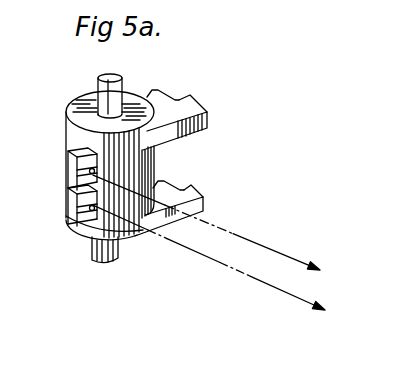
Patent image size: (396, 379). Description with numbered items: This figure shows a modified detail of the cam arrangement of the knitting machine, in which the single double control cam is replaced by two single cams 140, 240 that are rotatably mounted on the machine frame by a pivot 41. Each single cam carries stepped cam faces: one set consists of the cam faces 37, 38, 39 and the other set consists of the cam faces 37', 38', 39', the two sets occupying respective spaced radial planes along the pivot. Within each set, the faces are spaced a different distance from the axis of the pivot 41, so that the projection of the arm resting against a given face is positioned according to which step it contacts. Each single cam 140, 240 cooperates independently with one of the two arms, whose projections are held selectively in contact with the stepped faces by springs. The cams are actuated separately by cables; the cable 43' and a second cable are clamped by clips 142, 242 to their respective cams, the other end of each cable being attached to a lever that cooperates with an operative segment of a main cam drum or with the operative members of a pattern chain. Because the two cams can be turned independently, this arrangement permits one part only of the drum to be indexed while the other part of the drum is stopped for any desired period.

The pivot 41 is at (106, 92).
The cam face 37' is at (165, 81).
The cam face 38' is at (198, 91).
The cam face 39' is at (198, 114).
The cam face 37 is at (170, 171).
The cam face 38 is at (203, 178).
The cam face 39 is at (190, 207).
The single cam 140 is at (78, 135).
The clip 142 is at (68, 158).
The clip 242 is at (68, 214).
The single cam 240 is at (93, 228).
The cable 43' is at (209, 257).